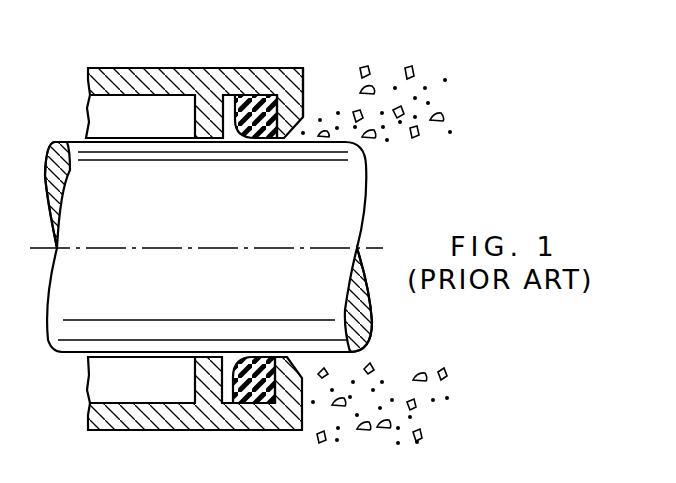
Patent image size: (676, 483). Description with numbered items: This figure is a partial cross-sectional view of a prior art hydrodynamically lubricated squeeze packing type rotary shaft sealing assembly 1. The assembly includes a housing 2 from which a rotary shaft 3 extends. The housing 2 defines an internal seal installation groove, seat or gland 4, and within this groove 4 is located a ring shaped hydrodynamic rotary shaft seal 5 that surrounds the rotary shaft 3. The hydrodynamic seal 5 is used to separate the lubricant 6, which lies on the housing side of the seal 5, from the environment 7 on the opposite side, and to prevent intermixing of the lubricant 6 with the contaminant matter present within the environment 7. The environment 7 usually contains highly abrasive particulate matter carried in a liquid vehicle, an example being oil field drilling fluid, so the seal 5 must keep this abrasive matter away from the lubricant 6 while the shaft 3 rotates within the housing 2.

The rotary shaft sealing assembly 1 is at (259, 55).
The housing 2 is at (137, 67).
The rotary shaft 3 is at (345, 201).
The seal installation groove 4 is at (233, 133).
The hydrodynamic rotary shaft seal 5 is at (259, 403).
The lubricant 6 is at (177, 107).
The environment 7 is at (315, 118).